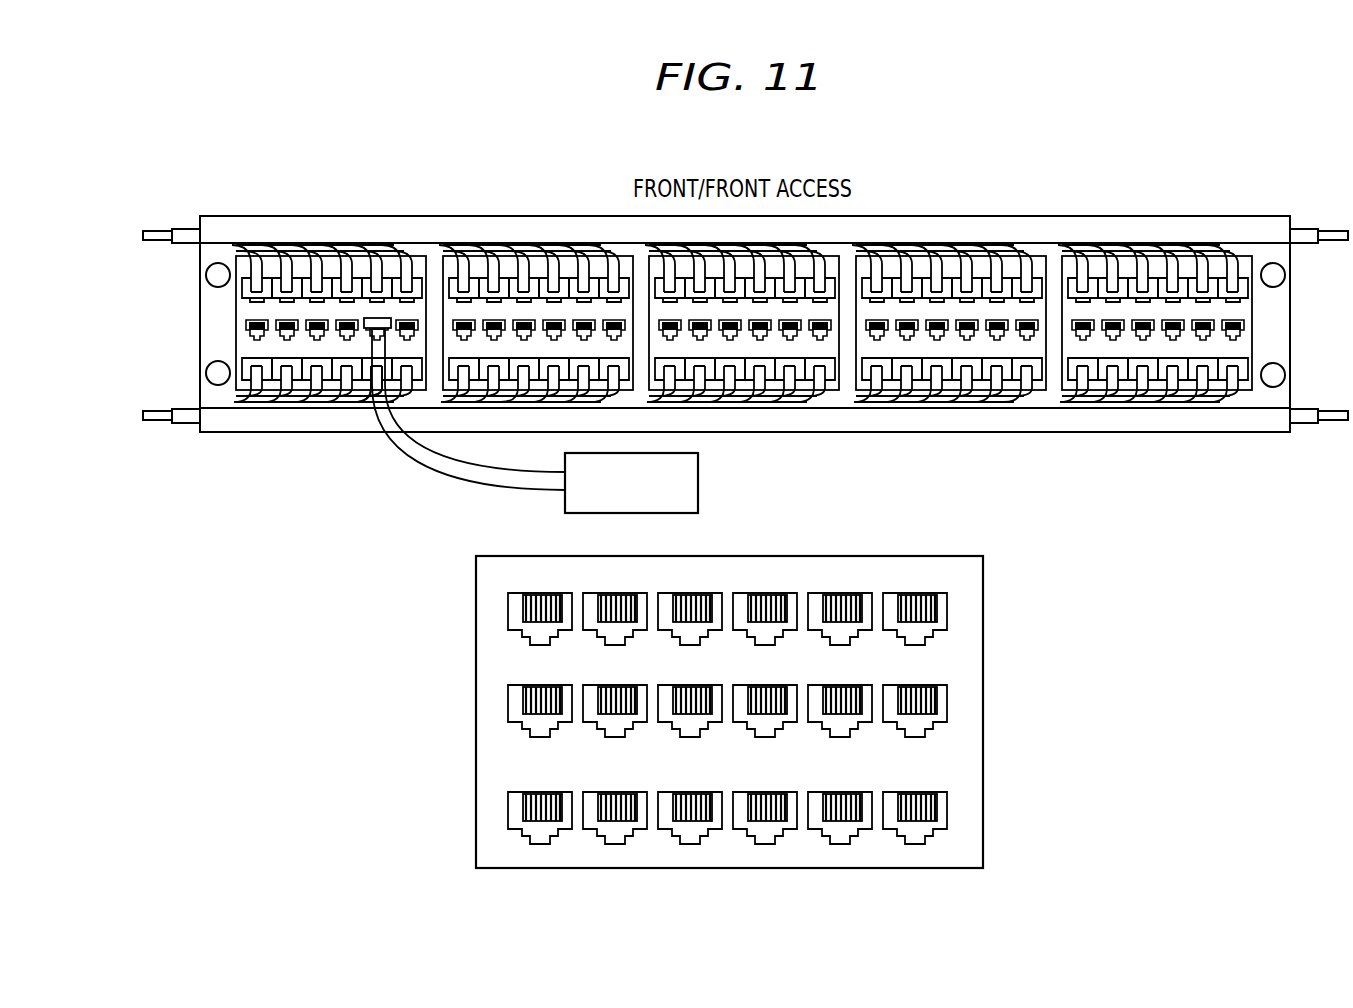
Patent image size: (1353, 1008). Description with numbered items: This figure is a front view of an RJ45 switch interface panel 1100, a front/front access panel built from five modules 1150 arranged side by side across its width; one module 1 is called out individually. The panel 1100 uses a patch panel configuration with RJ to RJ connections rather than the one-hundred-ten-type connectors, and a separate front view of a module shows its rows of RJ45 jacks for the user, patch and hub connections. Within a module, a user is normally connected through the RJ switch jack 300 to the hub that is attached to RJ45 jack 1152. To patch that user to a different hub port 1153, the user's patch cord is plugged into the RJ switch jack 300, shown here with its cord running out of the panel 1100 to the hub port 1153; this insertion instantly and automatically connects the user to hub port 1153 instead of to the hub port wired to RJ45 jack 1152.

The module 1 is at (292, 372).
The RJ switch jack 300 is at (385, 318).
The module 1150 is at (243, 434).
The RJ45 jack 1152 is at (368, 370).
The hub port 1153 is at (698, 483).
The RJ45 switch interface panel 1100 is at (476, 690).